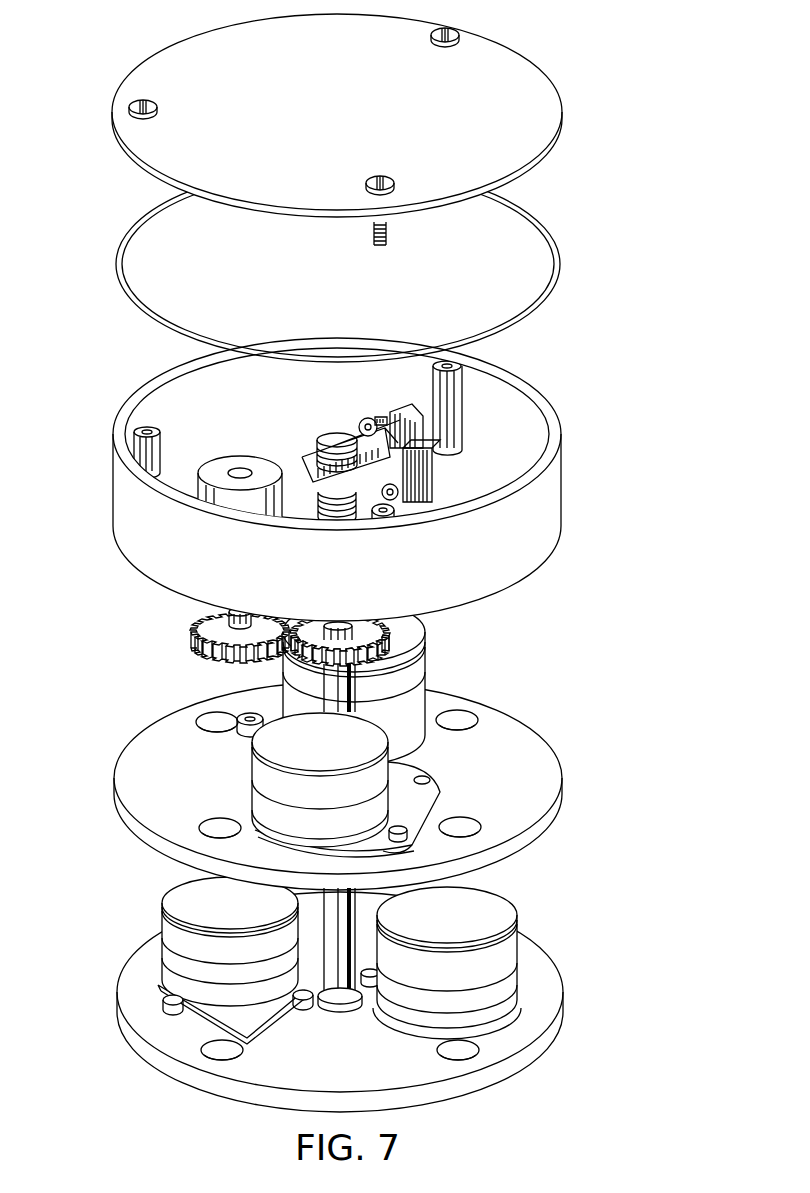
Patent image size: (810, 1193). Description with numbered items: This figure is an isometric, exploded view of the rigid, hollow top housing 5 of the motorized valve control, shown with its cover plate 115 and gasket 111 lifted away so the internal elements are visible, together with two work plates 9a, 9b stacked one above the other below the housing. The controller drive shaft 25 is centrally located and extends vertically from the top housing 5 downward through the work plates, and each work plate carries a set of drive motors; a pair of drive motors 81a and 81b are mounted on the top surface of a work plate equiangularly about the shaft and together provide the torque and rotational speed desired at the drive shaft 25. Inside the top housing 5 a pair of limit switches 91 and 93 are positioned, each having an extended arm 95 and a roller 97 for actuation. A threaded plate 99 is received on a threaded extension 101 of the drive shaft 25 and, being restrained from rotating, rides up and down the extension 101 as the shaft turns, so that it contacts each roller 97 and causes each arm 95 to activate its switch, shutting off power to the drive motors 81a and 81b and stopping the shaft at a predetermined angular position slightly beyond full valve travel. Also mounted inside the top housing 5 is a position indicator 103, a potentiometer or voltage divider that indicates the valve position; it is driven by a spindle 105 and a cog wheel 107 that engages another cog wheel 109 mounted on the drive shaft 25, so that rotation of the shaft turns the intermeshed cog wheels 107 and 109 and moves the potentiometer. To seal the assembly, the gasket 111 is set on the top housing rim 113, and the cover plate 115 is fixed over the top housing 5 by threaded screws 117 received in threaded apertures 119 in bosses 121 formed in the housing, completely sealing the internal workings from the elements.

The top housing 5 is at (350, 479).
The work plate 9a is at (553, 780).
The work plate 9b is at (553, 1003).
The controller drive shaft 25 is at (342, 693).
The drive motor 81a is at (405, 662).
The drive motor 81b is at (265, 743).
The limit switch 91 is at (392, 420).
The limit switch 93 is at (426, 470).
The extended arm 95 is at (372, 424).
The roller 97 is at (365, 425).
The threaded plate 99 is at (318, 475).
The threaded shaft extension 101 is at (349, 515).
The position indicator 103 is at (205, 480).
The spindle 105 is at (215, 628).
The cog wheel 107 is at (200, 656).
The cog wheel 109 is at (398, 630).
The gasket 111 is at (558, 262).
The top housing rim 113 is at (560, 447).
The cover plate 115 is at (192, 52).
The threaded screws 117 is at (460, 31).
The threaded apertures 119 is at (147, 430).
The bosses 121 is at (458, 412).